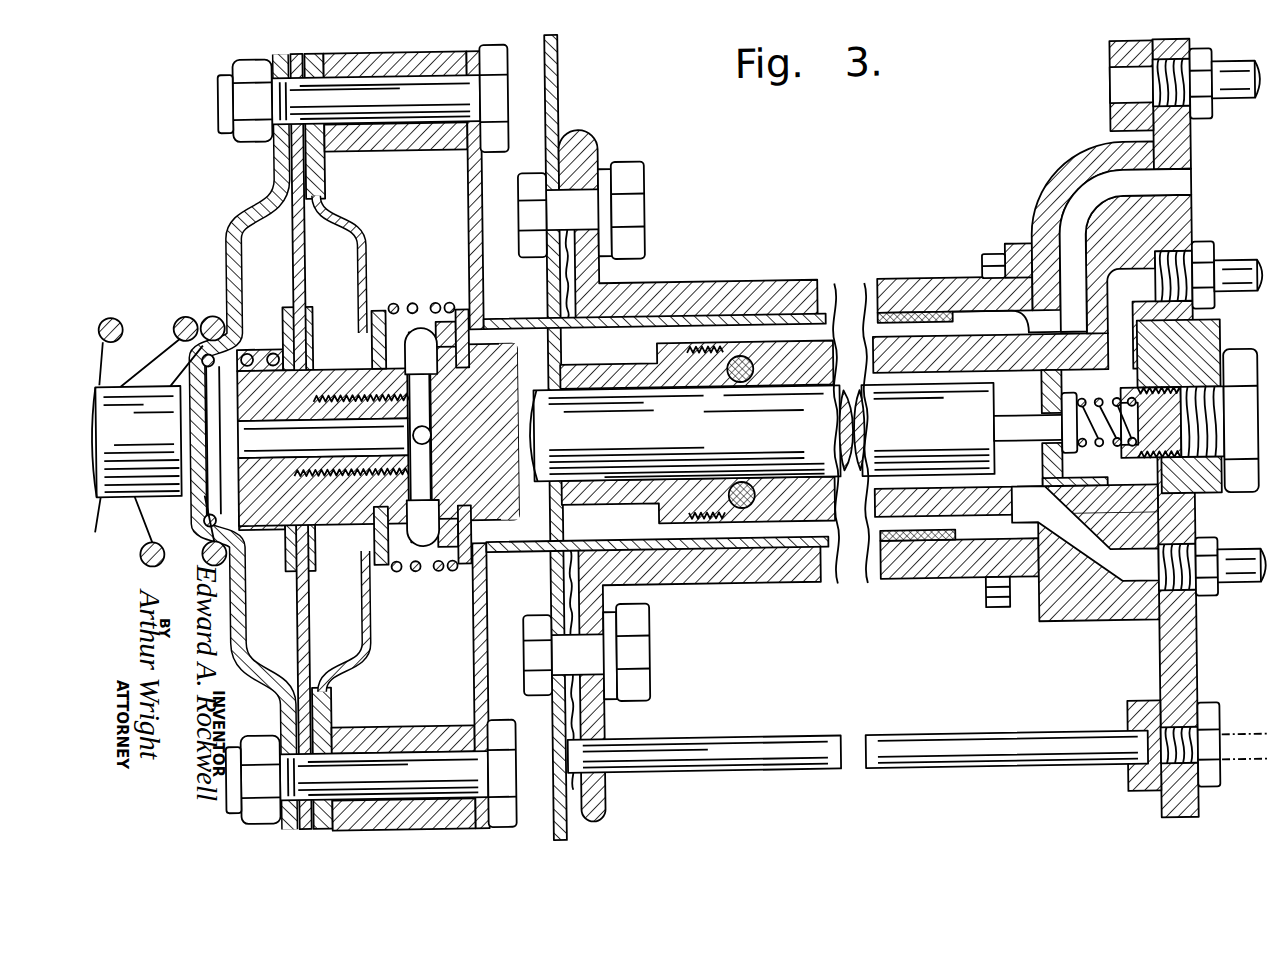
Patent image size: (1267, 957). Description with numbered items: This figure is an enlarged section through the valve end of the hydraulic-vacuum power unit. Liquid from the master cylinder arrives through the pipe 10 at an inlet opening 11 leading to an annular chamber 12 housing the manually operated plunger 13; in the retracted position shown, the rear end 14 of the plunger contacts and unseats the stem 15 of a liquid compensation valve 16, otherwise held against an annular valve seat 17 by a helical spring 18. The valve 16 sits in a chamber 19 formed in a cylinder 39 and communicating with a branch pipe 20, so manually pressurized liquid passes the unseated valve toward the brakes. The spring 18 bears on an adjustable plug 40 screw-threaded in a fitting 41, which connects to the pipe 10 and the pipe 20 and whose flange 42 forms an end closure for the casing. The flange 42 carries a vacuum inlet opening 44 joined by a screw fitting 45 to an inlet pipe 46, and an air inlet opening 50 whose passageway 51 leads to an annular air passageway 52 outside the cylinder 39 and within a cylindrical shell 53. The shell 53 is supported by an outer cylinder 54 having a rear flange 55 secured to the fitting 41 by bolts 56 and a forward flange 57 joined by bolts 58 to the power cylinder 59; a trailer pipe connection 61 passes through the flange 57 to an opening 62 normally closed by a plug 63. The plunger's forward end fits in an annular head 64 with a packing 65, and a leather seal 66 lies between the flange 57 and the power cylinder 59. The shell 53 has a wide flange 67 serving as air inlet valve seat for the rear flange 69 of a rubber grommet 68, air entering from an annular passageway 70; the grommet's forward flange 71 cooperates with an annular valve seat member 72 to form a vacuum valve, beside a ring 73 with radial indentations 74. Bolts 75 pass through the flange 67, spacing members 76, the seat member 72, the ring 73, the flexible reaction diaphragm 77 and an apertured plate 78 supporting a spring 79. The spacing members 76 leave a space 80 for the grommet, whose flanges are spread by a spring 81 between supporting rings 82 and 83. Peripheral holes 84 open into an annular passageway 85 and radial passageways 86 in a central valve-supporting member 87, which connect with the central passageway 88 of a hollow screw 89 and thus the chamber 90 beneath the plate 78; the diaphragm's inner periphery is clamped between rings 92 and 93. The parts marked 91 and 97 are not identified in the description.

The pipe 10 is at (1226, 562).
The inlet opening 11 is at (1072, 548).
The annular chamber 12 is at (981, 476).
The manually operated plunger 13 is at (832, 472).
The rear end of plunger 14 is at (985, 395).
The stem 15 is at (1012, 444).
The liquid compensation valve 16 is at (1066, 412).
The annular valve seat 17 is at (1040, 398).
The helical spring 18 is at (1095, 456).
The chamber 19 is at (1150, 472).
The branch pipe 20 is at (1237, 282).
The cylinder 39 is at (858, 346).
The adjustable plug 40 is at (1160, 410).
The fitting 41 is at (1238, 360).
The flange 42 is at (1182, 226).
The vacuum inlet opening 44 is at (1120, 86).
The screw fitting 45 is at (1203, 66).
The inlet pipe 46 is at (1236, 100).
The air inlet opening 50 is at (1185, 191).
The passageway 51 is at (1065, 196).
The annular air passageway 52 is at (968, 328).
The cylindrical shell 53 is at (880, 323).
The outer cylinder 54 is at (890, 300).
The rear flange 55 is at (1015, 260).
The bolts 56 is at (988, 262).
The flange 57 is at (586, 150).
The bolts 58 is at (640, 178).
The power cylinder 59 is at (560, 78).
The trailer pipe connection 61 is at (870, 750).
The opening 62 is at (1125, 778).
The plug 63 is at (1206, 790).
The annular head 64 is at (597, 370).
The packing 65 is at (740, 390).
The air-tight leather seal 66 is at (562, 318).
The wide flange 67 is at (478, 266).
The rubber grommet 68 is at (455, 365).
The rear flange 69 is at (446, 302).
The annular air passageway 70 is at (508, 330).
The forward vacuum valve flange 71 is at (369, 330).
The annular valve seat member 72 is at (355, 322).
The ring 73 is at (314, 198).
The radial indentations 74 is at (357, 268).
The bolts 75 is at (414, 100).
The spacing members 76 is at (378, 138).
The flexible reaction diaphragm 77 is at (291, 262).
The apertured plate 78 is at (232, 238).
The spring 79 is at (175, 314).
The space 80 is at (428, 223).
The spring 81 is at (433, 569).
The flange supporting ring 82 is at (391, 569).
The flange supporting ring 83 is at (447, 569).
The peripheral holes 84 is at (410, 569).
The annular passageway 85 is at (405, 495).
The radial passageways 86 is at (427, 440).
The central valve-supporting member 87 is at (505, 500).
The longitudinal central passageway 88 is at (355, 430).
The hollow screw 89 is at (268, 520).
The chamber 90 is at (240, 290).
The seal ring 91 is at (258, 350).
The clamping ring 92 is at (270, 565).
The clamping ring 93 is at (312, 565).
The cylinder 97 is at (120, 480).